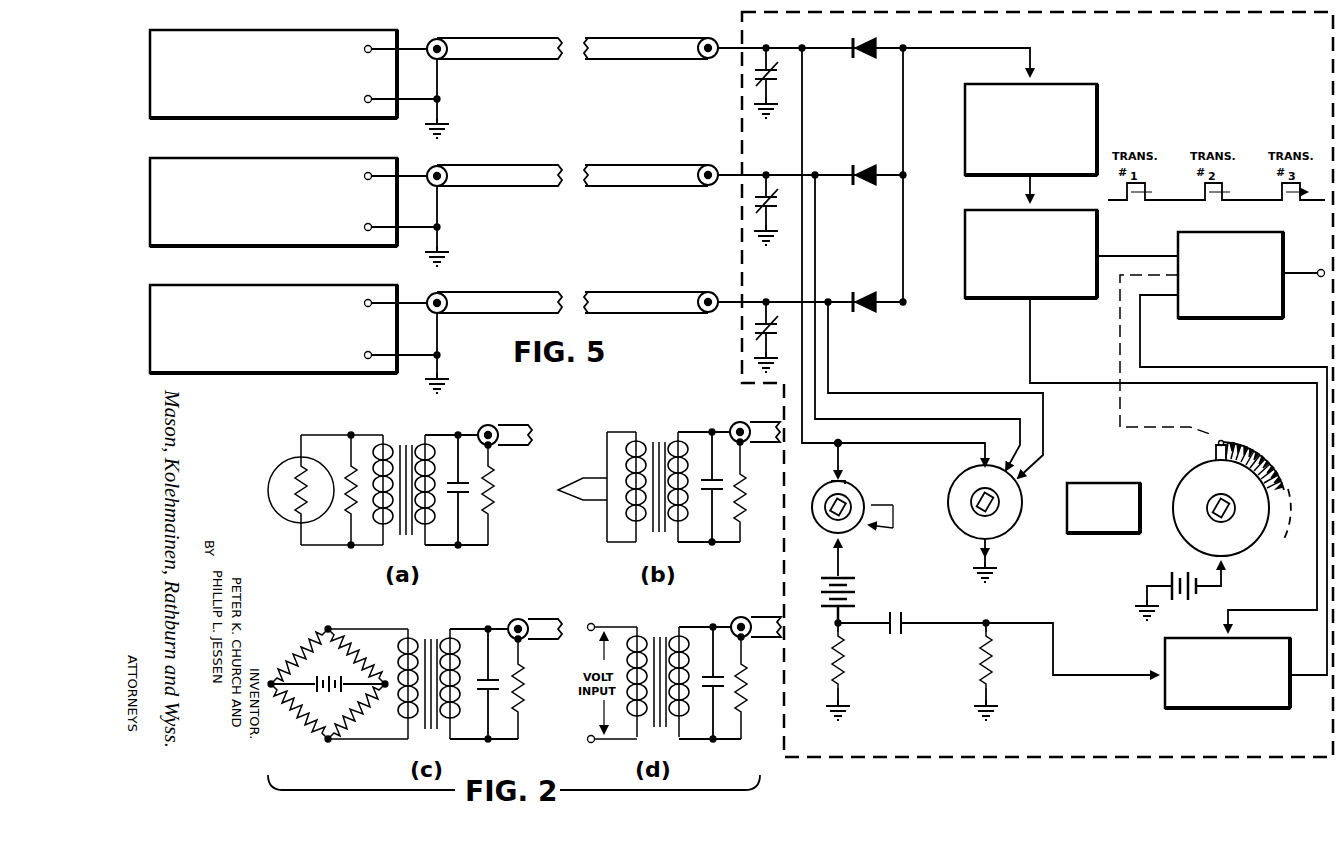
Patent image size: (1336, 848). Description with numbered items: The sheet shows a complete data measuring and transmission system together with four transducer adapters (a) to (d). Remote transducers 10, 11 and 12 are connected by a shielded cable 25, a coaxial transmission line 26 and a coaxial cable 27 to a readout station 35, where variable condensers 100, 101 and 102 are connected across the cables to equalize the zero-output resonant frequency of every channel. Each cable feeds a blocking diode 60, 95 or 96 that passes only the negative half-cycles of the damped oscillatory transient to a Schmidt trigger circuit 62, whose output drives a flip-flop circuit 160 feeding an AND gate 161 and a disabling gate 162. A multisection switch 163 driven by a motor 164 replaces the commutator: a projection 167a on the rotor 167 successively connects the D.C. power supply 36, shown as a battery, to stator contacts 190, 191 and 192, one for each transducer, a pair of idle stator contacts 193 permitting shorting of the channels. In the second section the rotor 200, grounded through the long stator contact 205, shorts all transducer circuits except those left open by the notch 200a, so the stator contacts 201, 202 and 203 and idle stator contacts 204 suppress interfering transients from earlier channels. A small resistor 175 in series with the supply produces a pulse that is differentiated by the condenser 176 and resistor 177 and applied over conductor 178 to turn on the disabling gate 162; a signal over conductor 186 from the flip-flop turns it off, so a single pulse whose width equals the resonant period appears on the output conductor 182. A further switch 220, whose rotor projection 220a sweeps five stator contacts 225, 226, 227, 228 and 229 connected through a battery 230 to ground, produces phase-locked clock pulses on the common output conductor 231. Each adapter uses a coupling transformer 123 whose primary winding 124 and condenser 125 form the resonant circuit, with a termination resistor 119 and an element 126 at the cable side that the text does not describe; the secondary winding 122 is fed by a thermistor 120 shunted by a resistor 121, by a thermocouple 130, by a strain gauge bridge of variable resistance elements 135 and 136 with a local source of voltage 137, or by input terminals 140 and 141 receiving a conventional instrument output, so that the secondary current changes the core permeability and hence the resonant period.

In FIG. 5, the transducer 10 is at (299, 30).
In FIG. 5, the transducer 11 is at (271, 158).
In FIG. 5, the transducer 12 is at (283, 285).
In FIG. 5, the shielded cable 25 is at (506, 36).
In FIG. 5, the coaxial transmission line 26 is at (493, 164).
In FIG. 5, the coaxial cable 27 is at (485, 290).
In FIG. 5, the readout station 35 is at (990, 760).
In FIG. 5, the D.C. power supply 36 is at (855, 597).
In FIG. 5, the isolation diode 60 is at (862, 40).
In FIG. 5, the Schmidt trigger circuit 62 is at (1050, 84).
In FIG. 5, the blocking diode 95 is at (866, 165).
In FIG. 5, the diode 96 is at (866, 293).
In FIG. 5, the variable condenser 100 is at (752, 78).
In FIG. 5, the variable condenser 101 is at (755, 203).
In FIG. 5, the variable condenser 102 is at (755, 330).
In FIG. 2, the resistor 119 is at (493, 502).
In FIG. 2, the thermistor 120 is at (284, 476).
In FIG. 2, the resistor 121 is at (346, 466).
In FIG. 2, the secondary winding 122 is at (380, 522).
In FIG. 2, the coupling transformer 123 is at (430, 424).
In FIG. 2, the primary winding 124 is at (432, 522).
In FIG. 2, the condenser 125 is at (470, 486).
In FIG. 2, the cable connector 126 is at (536, 424).
In FIG. 2, the thermocouple 130 is at (559, 492).
In FIG. 2, the variable resistance element 135 is at (285, 660).
In FIG. 2, the variable resistance element 136 is at (284, 710).
In FIG. 2, the local source of voltage 137 is at (346, 676).
In FIG. 2, the input terminal 140 is at (589, 624).
In FIG. 2, the input terminal 141 is at (588, 738).
In FIG. 5, the flip-flop circuit 160 is at (1007, 298).
In FIG. 5, the AND gate 161 is at (1203, 318).
In FIG. 5, the disabling gate 162 is at (1233, 708).
In FIG. 5, the multisection switch 163 is at (925, 474).
In FIG. 5, the motor 164 is at (1105, 533).
In FIG. 5, the rotor 167 is at (823, 530).
In FIG. 5, the projection 167a is at (830, 482).
In FIG. 5, the resistor 175 is at (845, 670).
In FIG. 5, the condenser 176 is at (899, 612).
In FIG. 5, the resistor 177 is at (980, 670).
In FIG. 5, the conductor 178 is at (1040, 622).
In FIG. 5, the output conductor 182 is at (1310, 277).
In FIG. 5, the conductor 186 is at (1030, 362).
In FIG. 5, the stator contact 190 is at (838, 462).
In FIG. 5, the stator contact 191 is at (862, 446).
In FIG. 5, the stator contact 192 is at (858, 478).
In FIG. 5, the idle stator contacts 193 is at (893, 528).
In FIG. 5, the rotor 200 is at (1008, 530).
In FIG. 5, the notch 200a is at (1000, 423).
In FIG. 5, the stator contact 201 is at (998, 456).
In FIG. 5, the stator contact 202 is at (1027, 466).
In FIG. 5, the stator contact 203 is at (1035, 484).
In FIG. 5, the idle stator contacts 204 is at (962, 480).
In FIG. 5, the long stator contact 205 is at (985, 560).
In FIG. 5, the switch 220 is at (1258, 534).
In FIG. 5, the rotor projection 220a is at (1210, 456).
In FIG. 5, the stator contact 225 is at (1216, 442).
In FIG. 5, the stator contact 226 is at (1218, 434).
In FIG. 5, the stator contact 227 is at (1233, 432).
In FIG. 5, the stator contact 228 is at (1248, 445).
In FIG. 5, the stator contact 229 is at (1258, 462).
In FIG. 5, the battery 230 is at (1172, 570).
In FIG. 5, the common output conductor 231 is at (1120, 360).